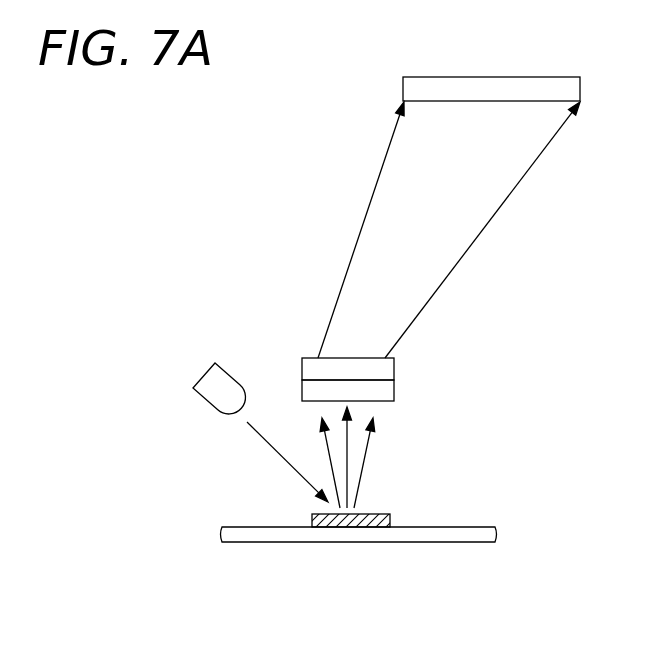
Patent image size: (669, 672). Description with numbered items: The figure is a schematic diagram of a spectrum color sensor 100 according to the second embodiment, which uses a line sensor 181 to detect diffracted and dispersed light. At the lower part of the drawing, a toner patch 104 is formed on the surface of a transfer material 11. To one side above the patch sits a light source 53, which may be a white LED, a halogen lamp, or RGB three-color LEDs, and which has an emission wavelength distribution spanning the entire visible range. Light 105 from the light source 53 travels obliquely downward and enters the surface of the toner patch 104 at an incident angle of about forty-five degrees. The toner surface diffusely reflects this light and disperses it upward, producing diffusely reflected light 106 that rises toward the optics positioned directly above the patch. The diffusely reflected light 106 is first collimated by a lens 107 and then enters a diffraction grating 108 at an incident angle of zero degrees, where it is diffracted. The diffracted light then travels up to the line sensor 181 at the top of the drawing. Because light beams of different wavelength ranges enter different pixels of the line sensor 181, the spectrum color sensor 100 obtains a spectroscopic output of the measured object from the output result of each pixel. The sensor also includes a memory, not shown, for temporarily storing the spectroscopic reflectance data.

The spectrum color sensor 100 is at (207, 163).
The line sensor 181 is at (492, 83).
The diffraction grating 108 is at (387, 370).
The lens 107 is at (385, 392).
The light source 53 is at (223, 370).
The light 105 is at (272, 450).
The diffusely reflected light 106 is at (367, 455).
The toner patch 104 is at (358, 522).
The transfer material 11 is at (252, 537).